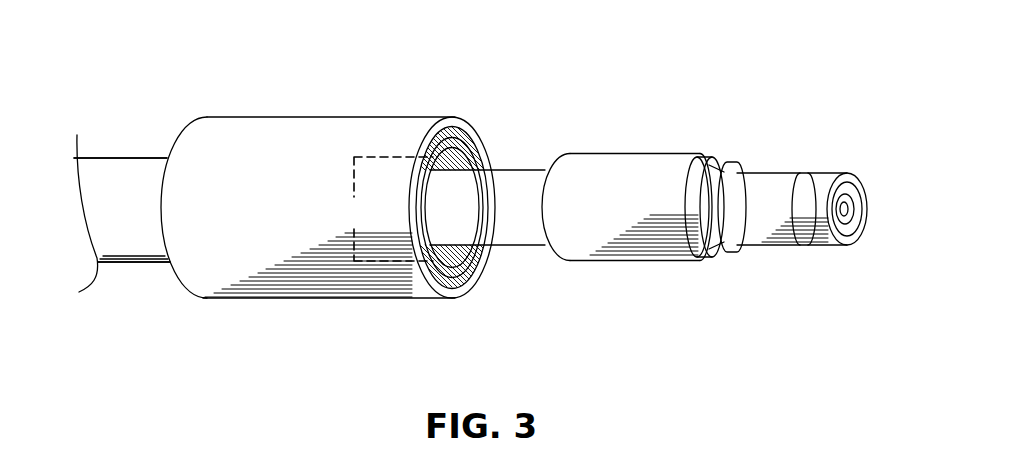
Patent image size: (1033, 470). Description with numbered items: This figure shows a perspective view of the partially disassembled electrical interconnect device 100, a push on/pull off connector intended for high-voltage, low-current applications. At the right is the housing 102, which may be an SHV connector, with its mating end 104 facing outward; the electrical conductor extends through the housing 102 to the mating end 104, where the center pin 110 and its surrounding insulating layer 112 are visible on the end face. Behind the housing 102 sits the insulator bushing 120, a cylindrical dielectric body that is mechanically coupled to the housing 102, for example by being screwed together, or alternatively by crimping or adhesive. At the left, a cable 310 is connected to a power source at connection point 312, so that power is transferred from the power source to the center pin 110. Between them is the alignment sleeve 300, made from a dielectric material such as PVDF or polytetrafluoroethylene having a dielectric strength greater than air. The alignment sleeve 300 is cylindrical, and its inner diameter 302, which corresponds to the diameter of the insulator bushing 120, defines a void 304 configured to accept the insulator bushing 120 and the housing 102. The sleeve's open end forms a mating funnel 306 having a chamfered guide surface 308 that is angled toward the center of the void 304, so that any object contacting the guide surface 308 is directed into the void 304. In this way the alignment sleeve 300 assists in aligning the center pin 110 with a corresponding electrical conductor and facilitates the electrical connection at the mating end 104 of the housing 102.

The electrical interconnect device 100 is at (196, 72).
The housing 102 is at (735, 228).
The mating end 104 is at (876, 220).
The center pin 110 is at (838, 212).
The insulating layer 112 is at (838, 198).
The insulator bushing 120 is at (568, 200).
The alignment sleeve 300 is at (327, 157).
The inner diameter 302 is at (385, 209).
The void 304 is at (452, 255).
The mating funnel 306 is at (463, 137).
The chamfered guide surface 308 is at (470, 158).
The cable 310 is at (118, 235).
The connection point 312 is at (78, 253).